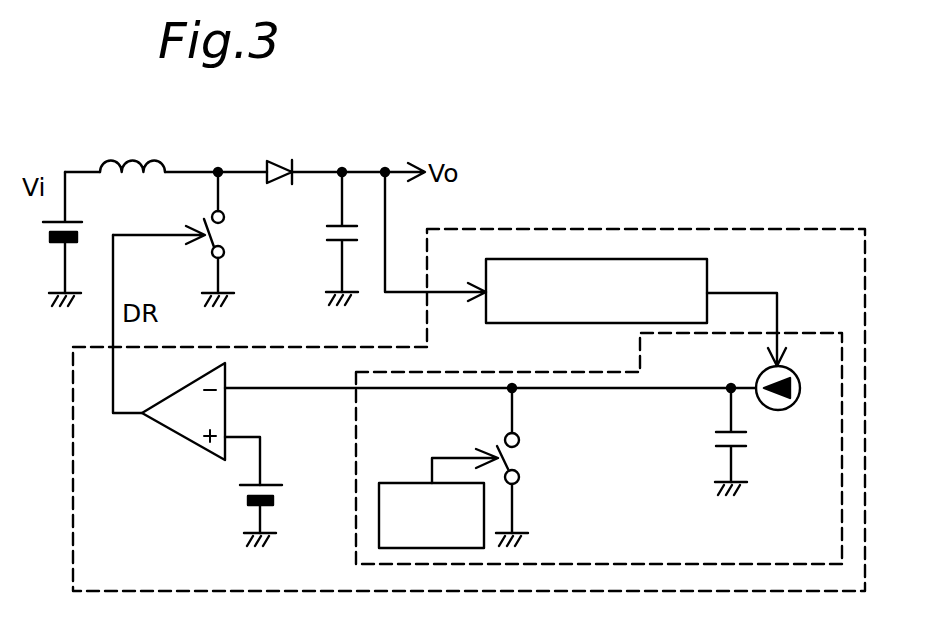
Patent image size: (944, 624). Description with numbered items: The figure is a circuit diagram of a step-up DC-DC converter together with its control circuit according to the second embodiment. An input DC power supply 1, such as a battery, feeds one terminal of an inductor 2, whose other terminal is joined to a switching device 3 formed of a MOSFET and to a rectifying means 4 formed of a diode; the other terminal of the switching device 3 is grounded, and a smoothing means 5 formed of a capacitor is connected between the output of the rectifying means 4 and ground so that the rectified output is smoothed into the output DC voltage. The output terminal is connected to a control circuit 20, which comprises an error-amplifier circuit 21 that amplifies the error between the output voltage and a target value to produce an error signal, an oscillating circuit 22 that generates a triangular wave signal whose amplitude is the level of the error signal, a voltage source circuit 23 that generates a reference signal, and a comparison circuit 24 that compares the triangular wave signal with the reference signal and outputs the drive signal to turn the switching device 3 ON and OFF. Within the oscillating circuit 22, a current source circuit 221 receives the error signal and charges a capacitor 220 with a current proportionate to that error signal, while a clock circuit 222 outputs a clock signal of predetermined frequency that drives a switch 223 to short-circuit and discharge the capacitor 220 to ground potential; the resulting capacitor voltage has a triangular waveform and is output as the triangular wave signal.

The input DC power supply 1 is at (56, 241).
The inductor 2 is at (163, 165).
The switching device 3 is at (225, 249).
The rectifying means 4 is at (292, 163).
The smoothing means 5 is at (327, 232).
The control circuit 20 is at (712, 229).
The error-amplifier circuit 21 is at (707, 275).
The oscillating circuit 22 is at (357, 445).
The voltage source circuit 23 is at (240, 493).
The comparison circuit 24 is at (170, 432).
The capacitor 220 is at (742, 450).
The current source circuit 221 is at (760, 373).
The clock circuit 222 is at (424, 483).
The switch 223 is at (519, 458).